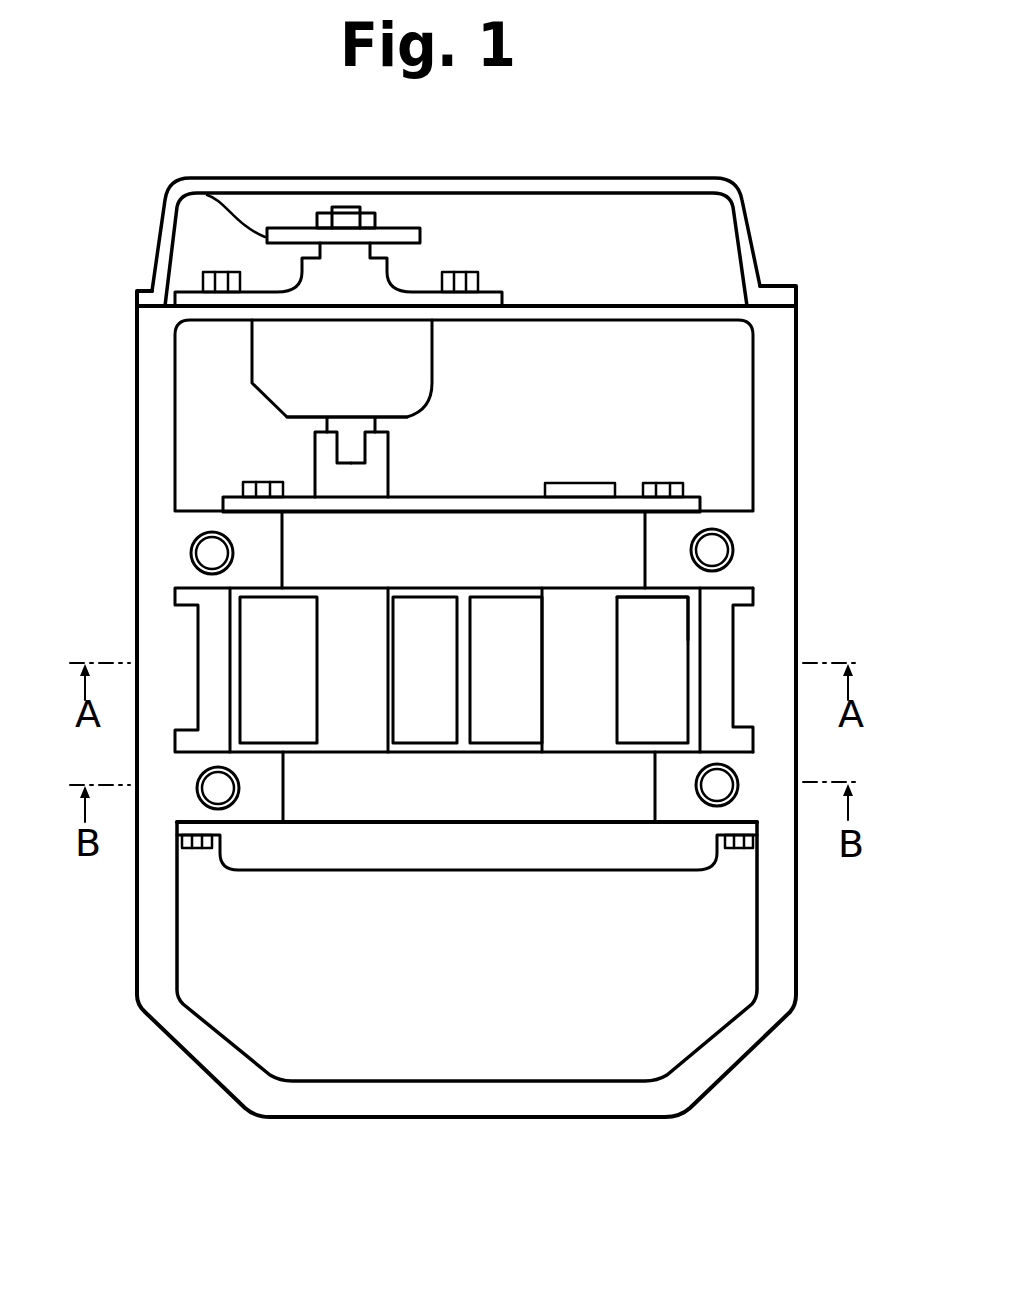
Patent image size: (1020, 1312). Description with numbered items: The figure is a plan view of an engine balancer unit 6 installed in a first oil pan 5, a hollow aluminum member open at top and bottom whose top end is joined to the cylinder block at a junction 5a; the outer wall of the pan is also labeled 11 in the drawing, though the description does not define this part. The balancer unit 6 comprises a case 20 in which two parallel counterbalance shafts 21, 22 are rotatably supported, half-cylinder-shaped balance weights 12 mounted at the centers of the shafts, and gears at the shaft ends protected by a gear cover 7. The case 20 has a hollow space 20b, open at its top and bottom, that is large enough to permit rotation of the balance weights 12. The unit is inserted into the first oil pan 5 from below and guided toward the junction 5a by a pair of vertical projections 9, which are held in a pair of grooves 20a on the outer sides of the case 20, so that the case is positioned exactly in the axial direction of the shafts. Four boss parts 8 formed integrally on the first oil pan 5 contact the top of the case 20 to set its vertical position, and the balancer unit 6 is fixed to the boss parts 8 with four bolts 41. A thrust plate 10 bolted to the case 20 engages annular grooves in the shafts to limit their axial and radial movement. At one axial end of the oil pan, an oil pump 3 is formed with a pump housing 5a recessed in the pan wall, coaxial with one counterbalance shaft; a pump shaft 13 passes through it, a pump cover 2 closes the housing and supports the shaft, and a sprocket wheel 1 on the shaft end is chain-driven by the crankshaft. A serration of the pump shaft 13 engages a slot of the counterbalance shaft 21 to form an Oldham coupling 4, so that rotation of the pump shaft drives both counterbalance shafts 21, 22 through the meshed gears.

The sprocket wheel 1 is at (165, 213).
The pump cover 2 is at (195, 298).
The oil pump 3 is at (407, 362).
The Oldham coupling 4 is at (316, 455).
The first oil pan 5 is at (140, 452).
The pump housing 5a is at (270, 377).
The balancer unit 6 is at (630, 797).
The gear cover 7 is at (594, 870).
The boss parts 8 is at (238, 532).
The vertical projections 9 is at (760, 632).
The thrust plate 10 is at (632, 497).
The cover 11 is at (745, 225).
The balance weights 12 is at (250, 658).
The pump shaft 13 is at (355, 450).
The case 20 is at (507, 527).
The grooves 20a is at (737, 670).
The hollow space 20b is at (672, 598).
The counterbalance shaft 21 is at (327, 646).
The counterbalance shaft 22 is at (583, 618).
The bolts 41 is at (212, 553).